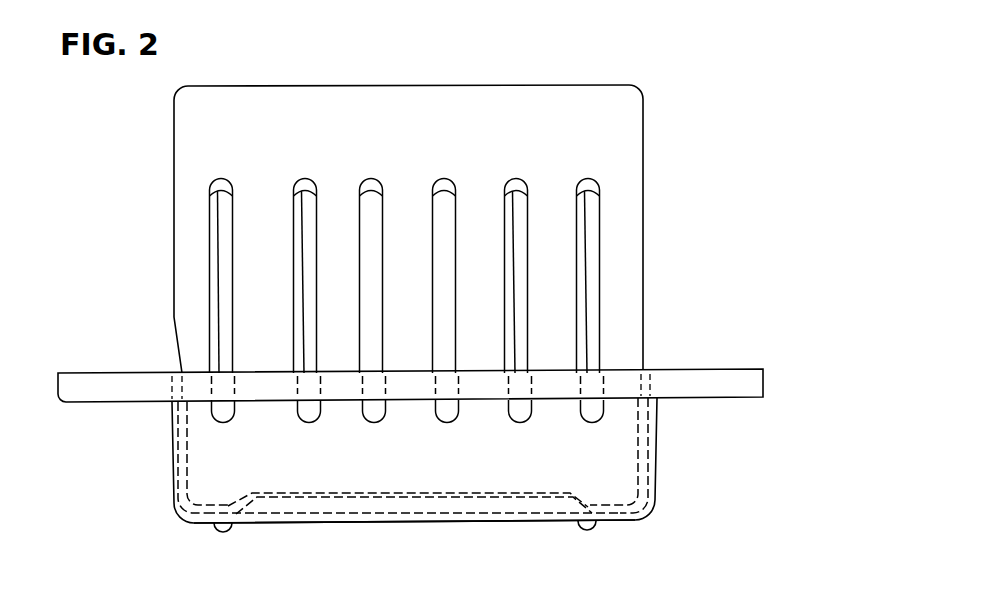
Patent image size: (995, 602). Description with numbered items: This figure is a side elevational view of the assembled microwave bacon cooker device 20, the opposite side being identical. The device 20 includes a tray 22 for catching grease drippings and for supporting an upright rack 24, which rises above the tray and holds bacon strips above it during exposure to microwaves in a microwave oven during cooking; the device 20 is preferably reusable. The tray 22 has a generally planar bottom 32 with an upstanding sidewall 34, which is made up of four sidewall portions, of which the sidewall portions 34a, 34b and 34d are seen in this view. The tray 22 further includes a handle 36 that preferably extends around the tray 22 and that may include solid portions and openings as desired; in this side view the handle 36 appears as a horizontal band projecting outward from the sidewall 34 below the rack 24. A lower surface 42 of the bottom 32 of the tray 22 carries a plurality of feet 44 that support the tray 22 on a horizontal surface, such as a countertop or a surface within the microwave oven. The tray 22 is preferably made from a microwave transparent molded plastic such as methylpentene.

The microwave bacon cooker device 20 is at (781, 3).
The tray 22 is at (655, 492).
The rack 24 is at (412, 85).
The bottom 32 is at (282, 517).
The sidewall 34 is at (657, 452).
The sidewall portion 34a is at (427, 457).
The sidewall portion 34b is at (657, 475).
The sidewall portion 34d is at (172, 475).
The handle 36 is at (763, 368).
The lower surface 42 is at (443, 522).
The feet 44 is at (223, 530).